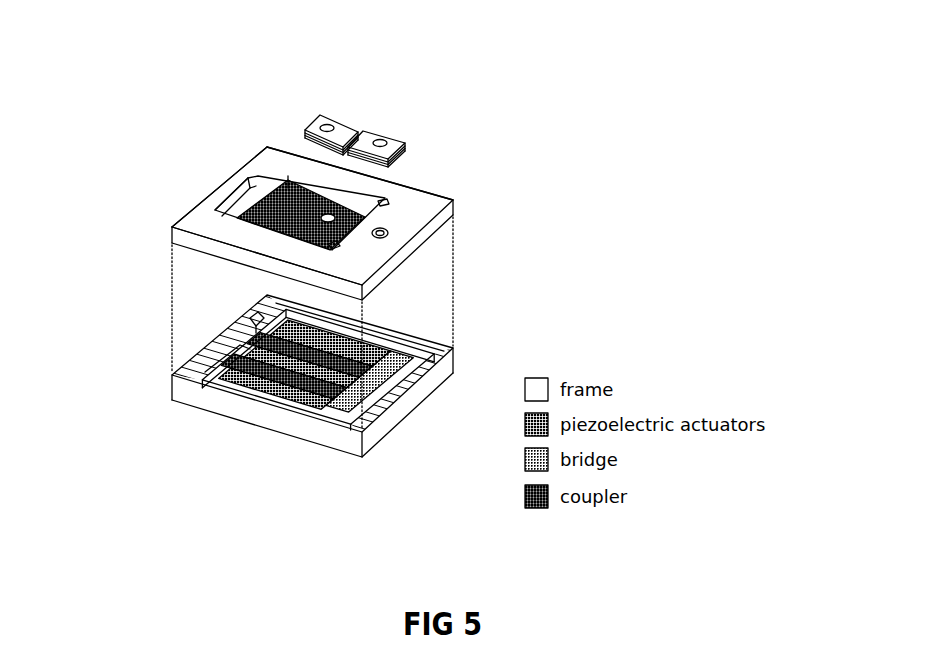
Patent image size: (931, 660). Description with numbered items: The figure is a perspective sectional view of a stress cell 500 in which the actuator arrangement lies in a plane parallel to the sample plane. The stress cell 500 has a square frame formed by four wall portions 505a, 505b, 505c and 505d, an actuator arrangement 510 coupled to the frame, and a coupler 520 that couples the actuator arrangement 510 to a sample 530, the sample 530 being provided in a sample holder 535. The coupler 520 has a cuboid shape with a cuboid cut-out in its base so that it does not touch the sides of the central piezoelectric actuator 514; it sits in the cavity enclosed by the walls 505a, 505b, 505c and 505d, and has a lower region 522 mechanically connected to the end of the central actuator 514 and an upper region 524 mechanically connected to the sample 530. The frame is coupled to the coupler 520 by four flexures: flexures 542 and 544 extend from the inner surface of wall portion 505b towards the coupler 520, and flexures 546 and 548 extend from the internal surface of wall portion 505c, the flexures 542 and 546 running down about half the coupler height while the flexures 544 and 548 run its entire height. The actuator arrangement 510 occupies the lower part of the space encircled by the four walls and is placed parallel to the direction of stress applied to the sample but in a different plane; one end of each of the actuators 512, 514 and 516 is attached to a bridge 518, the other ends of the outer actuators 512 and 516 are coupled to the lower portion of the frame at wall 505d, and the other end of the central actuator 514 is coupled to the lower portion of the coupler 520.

The stress cell 500 is at (421, 53).
The wall portion 505a is at (360, 263).
The wall portion 505b is at (373, 190).
The wall portion 505c is at (280, 242).
The wall portion 505d is at (218, 193).
The actuator arrangement 510 is at (316, 441).
The outer actuator 512 is at (273, 392).
The central piezoelectric actuator 514 is at (309, 406).
The outer actuator 516 is at (350, 404).
The bridge 518 is at (400, 388).
The coupler 520 is at (287, 175).
The lower region 522 is at (247, 343).
The upper region 524 is at (386, 204).
The sample 530 is at (355, 132).
The sample holder 535 is at (342, 132).
The flexure 542 is at (384, 206).
The flexure 544 is at (258, 175).
The flexure 546 is at (338, 244).
The flexure 548 is at (218, 212).